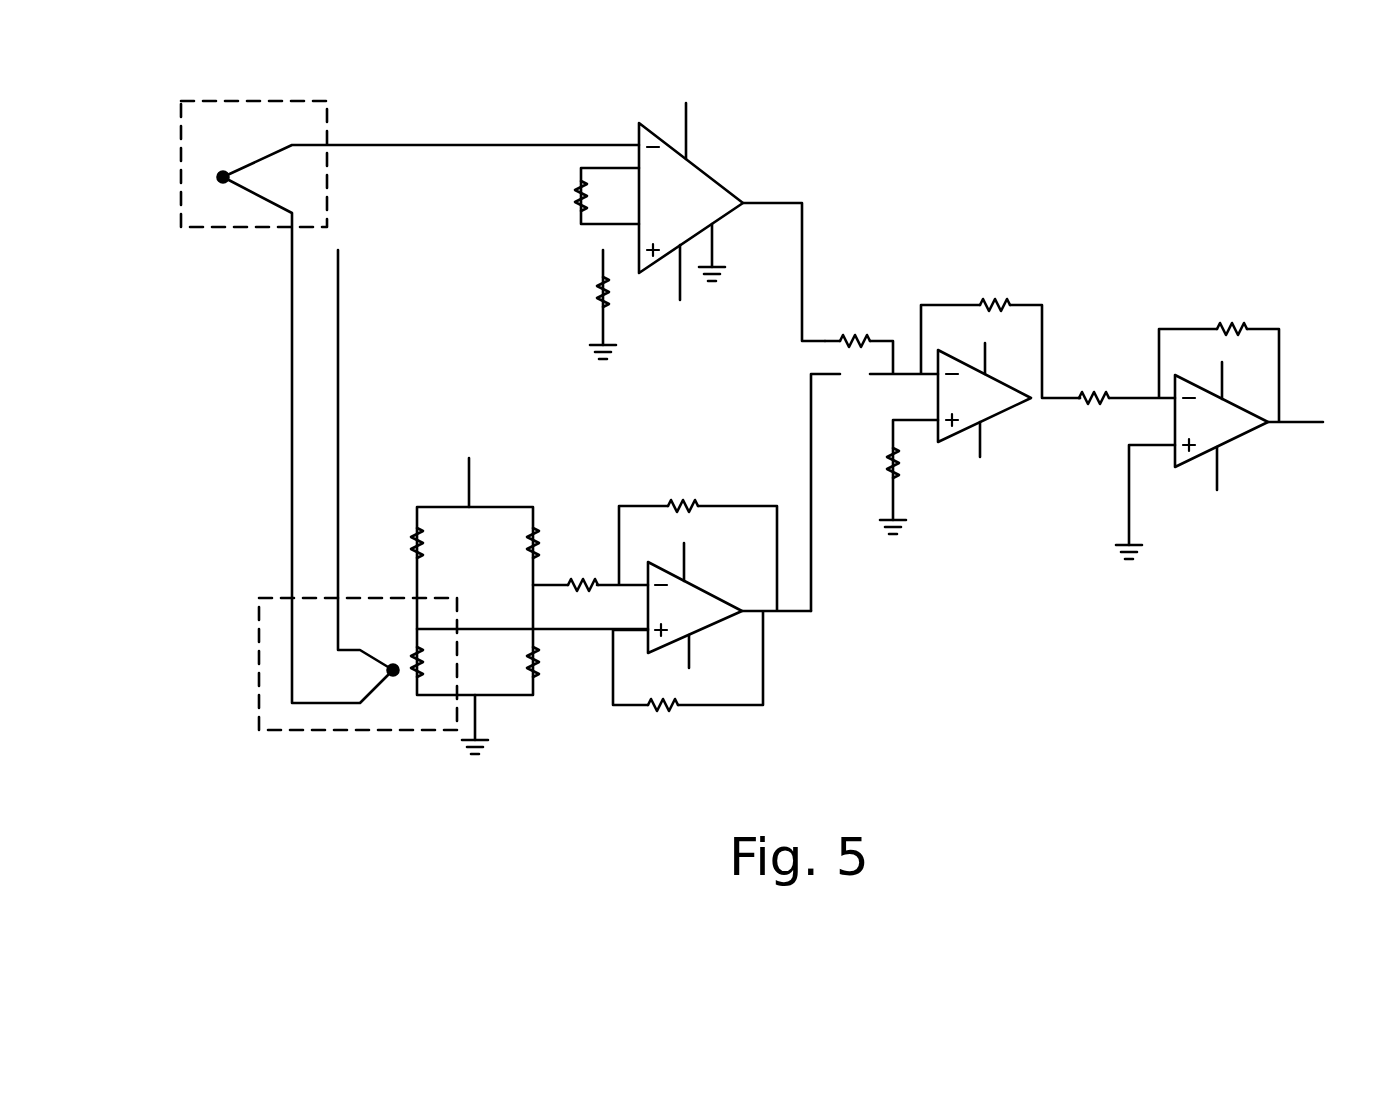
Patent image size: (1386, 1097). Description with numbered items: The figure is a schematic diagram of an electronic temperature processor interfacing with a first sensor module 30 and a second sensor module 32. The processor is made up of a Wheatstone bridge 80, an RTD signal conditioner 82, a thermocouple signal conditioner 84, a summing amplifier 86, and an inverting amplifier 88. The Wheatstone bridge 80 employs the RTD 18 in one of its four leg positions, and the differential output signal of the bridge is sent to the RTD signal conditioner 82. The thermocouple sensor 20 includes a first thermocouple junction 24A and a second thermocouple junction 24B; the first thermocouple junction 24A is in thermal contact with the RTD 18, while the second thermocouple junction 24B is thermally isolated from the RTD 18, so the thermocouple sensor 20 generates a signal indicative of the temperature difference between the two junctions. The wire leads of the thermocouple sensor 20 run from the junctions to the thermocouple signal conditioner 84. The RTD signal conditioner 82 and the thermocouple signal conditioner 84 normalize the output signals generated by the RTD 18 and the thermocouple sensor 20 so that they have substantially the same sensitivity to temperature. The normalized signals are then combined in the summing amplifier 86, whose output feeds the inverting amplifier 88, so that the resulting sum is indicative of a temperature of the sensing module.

The RTD 18 is at (414, 648).
The thermocouple sensor 20 is at (310, 630).
The first thermocouple junction 24A is at (402, 684).
The second thermocouple junction 24B is at (221, 196).
The first sensor module 30 is at (687, 443).
The second sensor module 32 is at (266, 165).
The Wheatstone bridge 80 is at (499, 579).
The RTD signal conditioner 82 is at (720, 486).
The thermocouple signal conditioner 84 is at (712, 136).
The summing amplifier 86 is at (1034, 296).
The inverting amplifier 88 is at (1260, 322).